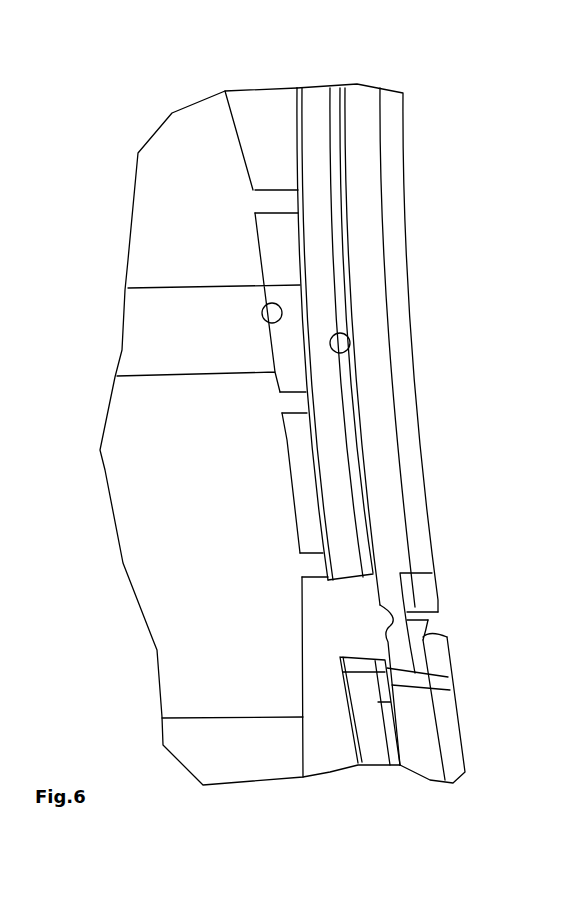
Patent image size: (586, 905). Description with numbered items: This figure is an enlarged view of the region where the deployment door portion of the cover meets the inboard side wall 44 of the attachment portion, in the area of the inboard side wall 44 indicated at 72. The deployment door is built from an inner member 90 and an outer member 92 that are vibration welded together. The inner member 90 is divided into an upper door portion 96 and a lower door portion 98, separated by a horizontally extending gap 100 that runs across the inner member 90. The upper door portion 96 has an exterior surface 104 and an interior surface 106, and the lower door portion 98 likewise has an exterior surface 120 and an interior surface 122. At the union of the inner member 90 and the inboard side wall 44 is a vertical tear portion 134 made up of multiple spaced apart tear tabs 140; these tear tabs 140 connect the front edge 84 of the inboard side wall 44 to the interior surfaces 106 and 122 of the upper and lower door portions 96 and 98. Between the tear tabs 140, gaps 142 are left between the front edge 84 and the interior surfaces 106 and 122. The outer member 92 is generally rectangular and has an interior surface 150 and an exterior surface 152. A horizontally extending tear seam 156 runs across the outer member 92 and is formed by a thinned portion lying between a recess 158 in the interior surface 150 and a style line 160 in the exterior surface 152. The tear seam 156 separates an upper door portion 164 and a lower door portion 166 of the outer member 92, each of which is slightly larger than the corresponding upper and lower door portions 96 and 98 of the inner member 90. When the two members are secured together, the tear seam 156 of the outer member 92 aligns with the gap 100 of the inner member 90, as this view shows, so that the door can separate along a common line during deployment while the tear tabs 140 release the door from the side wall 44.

The inboard side wall 44 is at (148, 459).
The base body 72 is at (170, 547).
The front edge 84 is at (266, 322).
The inner member 90 is at (313, 78).
The outer member 92 is at (410, 130).
The upper door portion 96 is at (306, 146).
The lower door portion 98 is at (368, 742).
The gap 100 is at (330, 637).
The exterior surface 104 is at (370, 550).
The interior surface 106 is at (297, 267).
The exterior surface 120 is at (392, 712).
The interior surface 122 is at (330, 733).
The vertical tear portion 134 is at (286, 479).
The tear tabs 140 is at (283, 204).
The gaps 142 is at (290, 245).
The interior surface 150 is at (348, 336).
The exterior surface 152 is at (417, 400).
The tear seam 156 is at (432, 617).
The recess 158 is at (383, 617).
The style line 160 is at (433, 627).
The upper door portion 164 is at (378, 211).
The lower door portion 166 is at (435, 735).